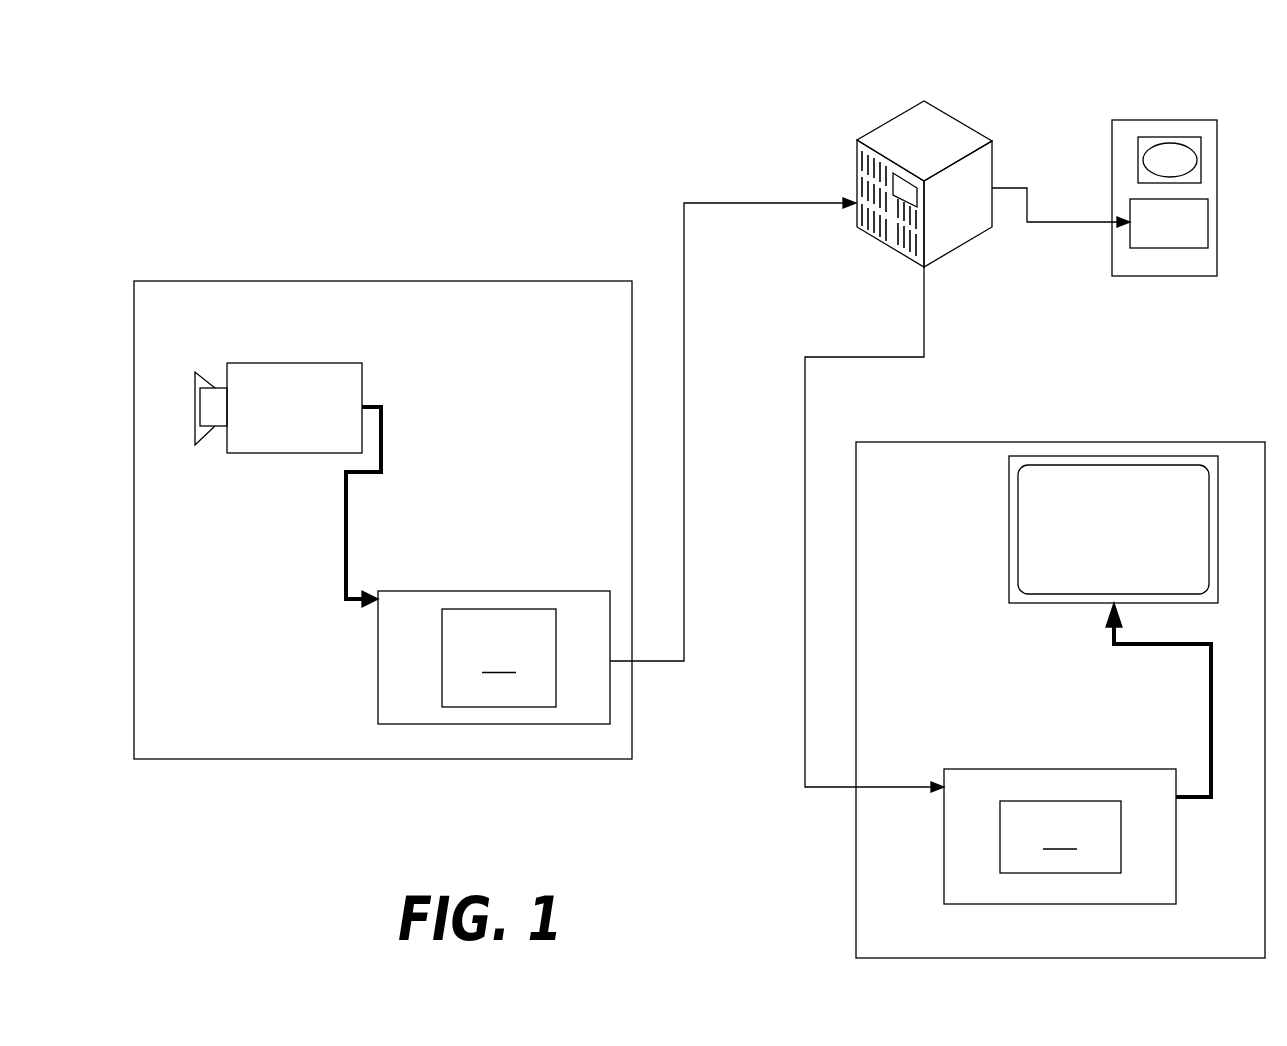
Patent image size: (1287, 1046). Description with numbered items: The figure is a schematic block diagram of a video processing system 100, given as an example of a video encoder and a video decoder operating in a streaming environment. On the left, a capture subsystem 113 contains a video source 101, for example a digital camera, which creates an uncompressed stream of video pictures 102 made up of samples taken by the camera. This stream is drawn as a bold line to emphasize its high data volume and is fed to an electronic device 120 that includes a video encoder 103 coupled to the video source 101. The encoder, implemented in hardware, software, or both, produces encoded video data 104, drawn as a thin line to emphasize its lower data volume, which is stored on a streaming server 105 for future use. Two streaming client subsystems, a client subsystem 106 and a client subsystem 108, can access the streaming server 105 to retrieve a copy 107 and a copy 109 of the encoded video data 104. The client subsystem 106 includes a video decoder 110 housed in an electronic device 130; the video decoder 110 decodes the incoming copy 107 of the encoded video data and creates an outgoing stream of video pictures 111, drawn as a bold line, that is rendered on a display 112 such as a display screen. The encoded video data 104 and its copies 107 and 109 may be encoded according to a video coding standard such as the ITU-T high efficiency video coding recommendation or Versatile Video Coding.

The video processing system 100 is at (1098, 68).
The video source 101 is at (290, 362).
The stream of video pictures 102 is at (344, 540).
The video encoder 103 is at (497, 590).
The encoded video data 104 is at (684, 238).
The streaming server 105 is at (856, 163).
The client subsystem 106 is at (855, 930).
The copy of encoded video data 107 is at (805, 600).
The client subsystem 108 is at (1217, 177).
The copy of encoded video data 109 is at (1058, 225).
The video decoder 110 is at (1060, 837).
The outgoing stream of video pictures 111 is at (1209, 707).
The display 112 is at (1009, 532).
The capture subsystem 113 is at (282, 759).
The electronic device 120 is at (494, 626).
The electronic device 130 is at (1027, 836).